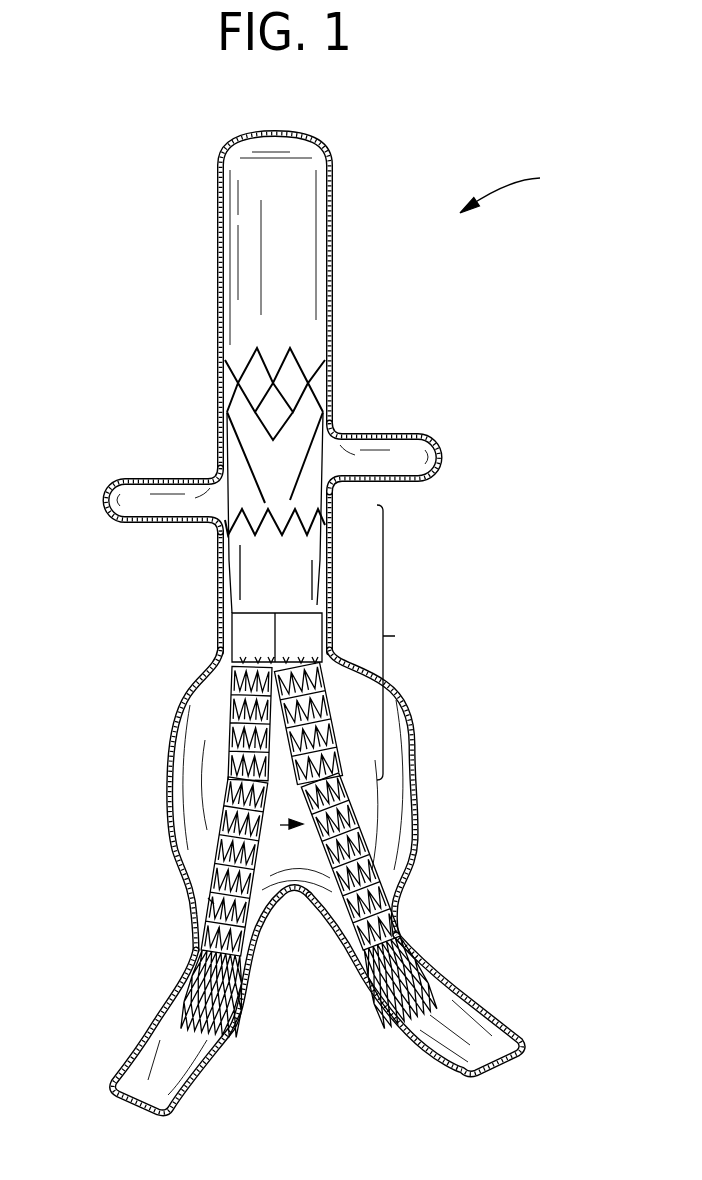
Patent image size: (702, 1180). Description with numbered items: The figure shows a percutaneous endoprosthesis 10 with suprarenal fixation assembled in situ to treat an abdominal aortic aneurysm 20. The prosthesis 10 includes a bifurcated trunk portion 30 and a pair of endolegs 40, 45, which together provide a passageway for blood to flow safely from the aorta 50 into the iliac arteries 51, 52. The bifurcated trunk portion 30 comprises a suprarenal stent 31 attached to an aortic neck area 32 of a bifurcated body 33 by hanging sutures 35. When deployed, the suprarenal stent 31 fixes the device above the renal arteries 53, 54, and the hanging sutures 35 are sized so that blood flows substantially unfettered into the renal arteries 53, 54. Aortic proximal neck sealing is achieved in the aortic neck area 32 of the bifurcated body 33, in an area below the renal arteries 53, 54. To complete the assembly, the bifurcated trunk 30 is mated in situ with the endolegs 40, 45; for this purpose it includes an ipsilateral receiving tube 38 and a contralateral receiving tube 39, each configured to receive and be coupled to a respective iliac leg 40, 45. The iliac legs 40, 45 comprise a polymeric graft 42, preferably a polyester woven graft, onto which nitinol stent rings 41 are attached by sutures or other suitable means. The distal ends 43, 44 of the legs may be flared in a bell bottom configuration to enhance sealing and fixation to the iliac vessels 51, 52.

The endoprosthesis 10 is at (517, 188).
The abdominal aortic aneurysm 20 is at (398, 842).
The bifurcated trunk portion 30 is at (400, 642).
The suprarenal stent 31 is at (320, 373).
The aortic neck area 32 is at (310, 562).
The bifurcated body 33 is at (272, 637).
The hanging sutures 35 is at (242, 468).
The ipsilateral receiving tube 38 is at (237, 748).
The contralateral receiving tube 39 is at (327, 743).
The iliac leg endograft 40 is at (193, 868).
The stent rings 41 is at (383, 893).
The polymeric graft 42 is at (212, 900).
The distal end 43 is at (179, 999).
The distal end 44 is at (438, 966).
The iliac leg endograft 45 is at (280, 825).
The aorta 50 is at (313, 200).
The iliac artery 51 is at (141, 1076).
The iliac artery 52 is at (497, 1027).
The renal artery 53 is at (105, 490).
The renal artery 54 is at (437, 442).